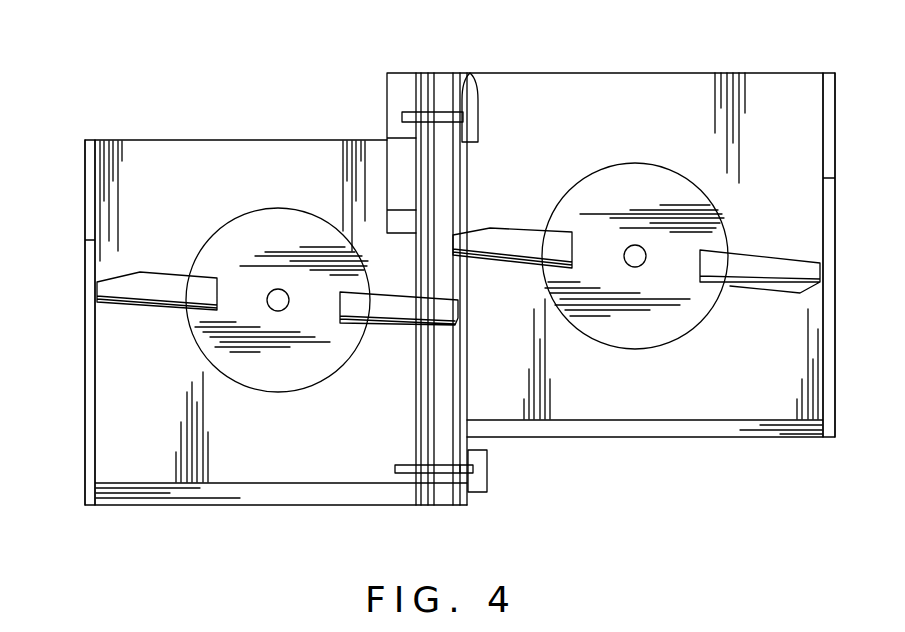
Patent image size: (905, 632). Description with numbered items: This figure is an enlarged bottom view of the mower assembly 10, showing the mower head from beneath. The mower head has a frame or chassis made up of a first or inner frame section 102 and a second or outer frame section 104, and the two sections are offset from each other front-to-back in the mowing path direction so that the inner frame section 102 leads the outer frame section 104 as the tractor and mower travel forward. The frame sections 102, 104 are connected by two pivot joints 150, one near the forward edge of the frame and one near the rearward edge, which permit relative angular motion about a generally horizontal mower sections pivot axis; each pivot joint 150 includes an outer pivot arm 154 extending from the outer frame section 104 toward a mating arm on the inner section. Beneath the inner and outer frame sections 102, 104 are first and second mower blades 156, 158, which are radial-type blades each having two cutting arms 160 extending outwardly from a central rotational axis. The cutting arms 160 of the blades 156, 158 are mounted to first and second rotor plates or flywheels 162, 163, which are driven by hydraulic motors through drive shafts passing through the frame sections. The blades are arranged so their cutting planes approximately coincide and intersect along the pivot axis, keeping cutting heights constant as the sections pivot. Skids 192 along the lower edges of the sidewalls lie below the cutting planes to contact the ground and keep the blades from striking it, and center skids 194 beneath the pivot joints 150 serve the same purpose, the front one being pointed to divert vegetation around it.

The mower assembly 10 is at (735, 57).
The inner frame section 102 is at (568, 68).
The outer frame section 104 is at (290, 138).
The pivot joint 150 is at (445, 475).
The outer pivot arm 154 is at (412, 113).
The first mower blade 156 is at (650, 320).
The second mower blade 158 is at (255, 240).
The cutting arm 160 is at (135, 285).
The first rotor plate 162 is at (636, 187).
The second rotor plate 163 is at (280, 358).
The skid 192 is at (92, 270).
The center skid 194 is at (470, 123).